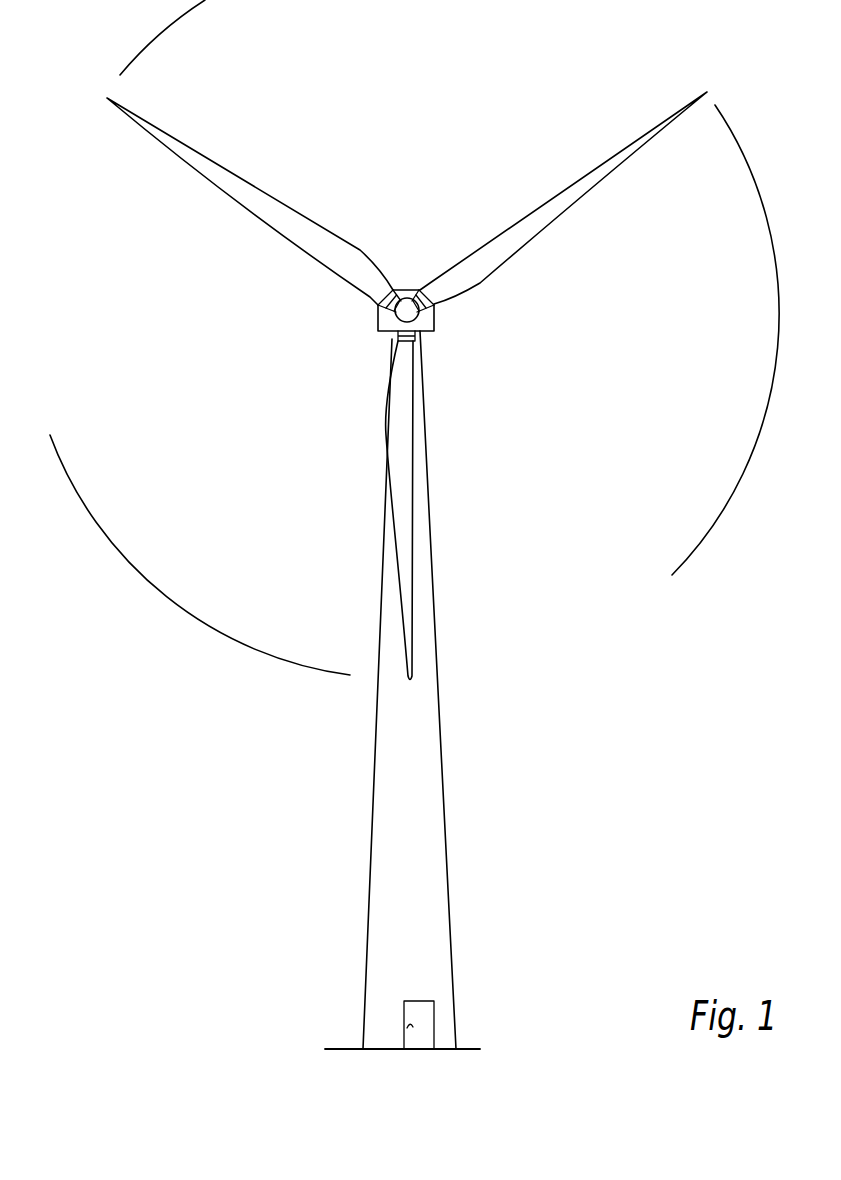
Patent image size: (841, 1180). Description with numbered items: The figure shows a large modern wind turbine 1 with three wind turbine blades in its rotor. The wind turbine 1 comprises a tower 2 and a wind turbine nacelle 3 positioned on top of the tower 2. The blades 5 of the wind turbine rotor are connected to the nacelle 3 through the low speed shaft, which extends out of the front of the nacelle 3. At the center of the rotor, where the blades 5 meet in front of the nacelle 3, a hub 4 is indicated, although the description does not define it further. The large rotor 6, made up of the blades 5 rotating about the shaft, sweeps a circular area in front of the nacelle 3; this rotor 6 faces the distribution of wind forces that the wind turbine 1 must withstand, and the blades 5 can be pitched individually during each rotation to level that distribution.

The wind turbine 1 is at (362, 847).
The tower 2 is at (430, 785).
The wind turbine nacelle 3 is at (434, 331).
The hub 4 is at (378, 331).
The blades 5 is at (412, 612).
The rotor 6 is at (192, 628).